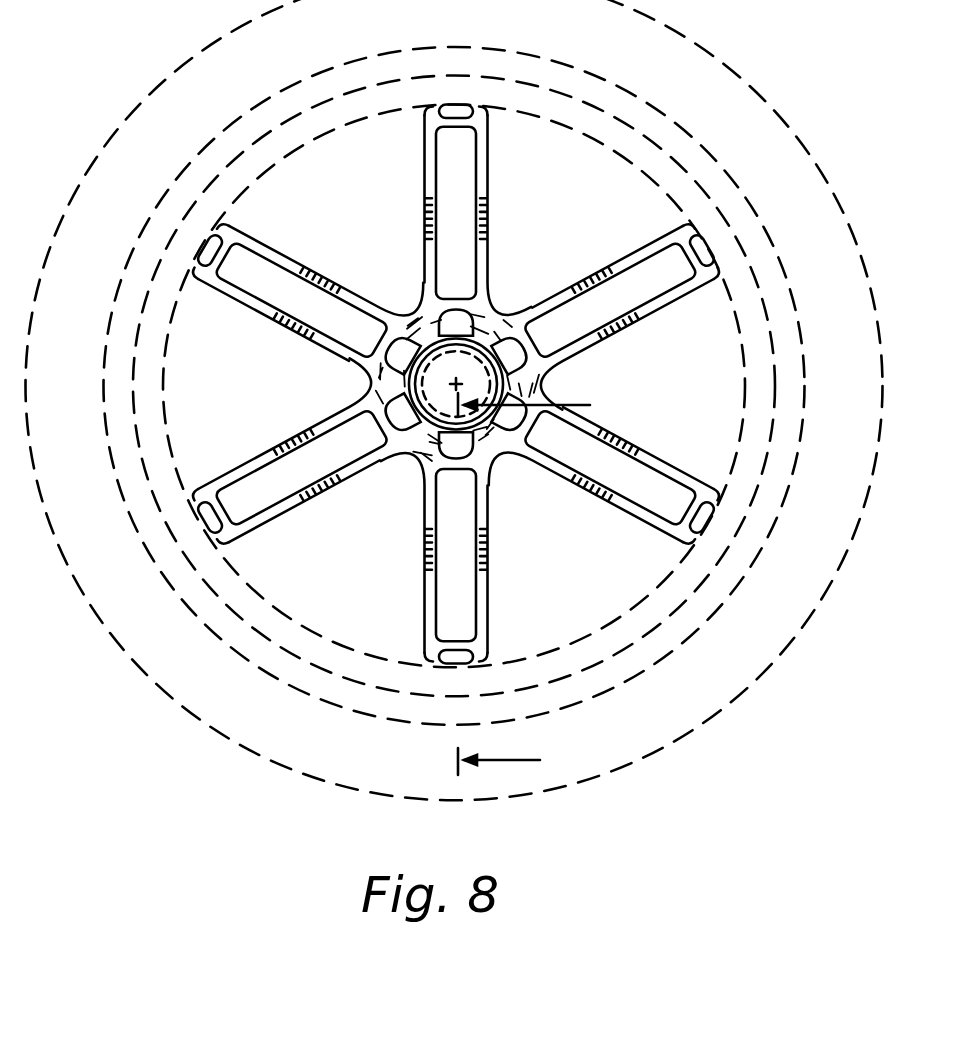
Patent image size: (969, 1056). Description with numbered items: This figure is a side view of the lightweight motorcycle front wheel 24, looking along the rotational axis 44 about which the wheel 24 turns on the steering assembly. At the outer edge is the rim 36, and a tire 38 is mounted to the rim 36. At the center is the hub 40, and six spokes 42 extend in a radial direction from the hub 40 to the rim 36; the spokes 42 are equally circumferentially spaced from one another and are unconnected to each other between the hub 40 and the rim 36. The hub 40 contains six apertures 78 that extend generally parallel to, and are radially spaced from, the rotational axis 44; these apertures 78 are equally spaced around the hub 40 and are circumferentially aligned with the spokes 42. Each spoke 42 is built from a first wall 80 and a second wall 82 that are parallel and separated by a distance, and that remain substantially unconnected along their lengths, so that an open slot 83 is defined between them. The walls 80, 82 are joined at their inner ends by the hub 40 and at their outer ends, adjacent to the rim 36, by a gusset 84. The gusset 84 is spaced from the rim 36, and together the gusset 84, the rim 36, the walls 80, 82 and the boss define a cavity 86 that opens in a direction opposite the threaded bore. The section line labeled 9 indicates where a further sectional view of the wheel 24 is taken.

The front wheel 24 is at (600, 176).
The rim 36 is at (770, 372).
The tire 38 is at (781, 112).
The hub 40 is at (410, 385).
The spokes 42 is at (326, 262).
The rotational axis 44 is at (458, 382).
The apertures 78 is at (418, 340).
The first wall 80 is at (426, 143).
The second wall 82 is at (490, 172).
The open slot 83 is at (452, 190).
The gusset 84 is at (480, 148).
The cavity 86 is at (458, 100).
The section line 9- 9 is at (539, 585).